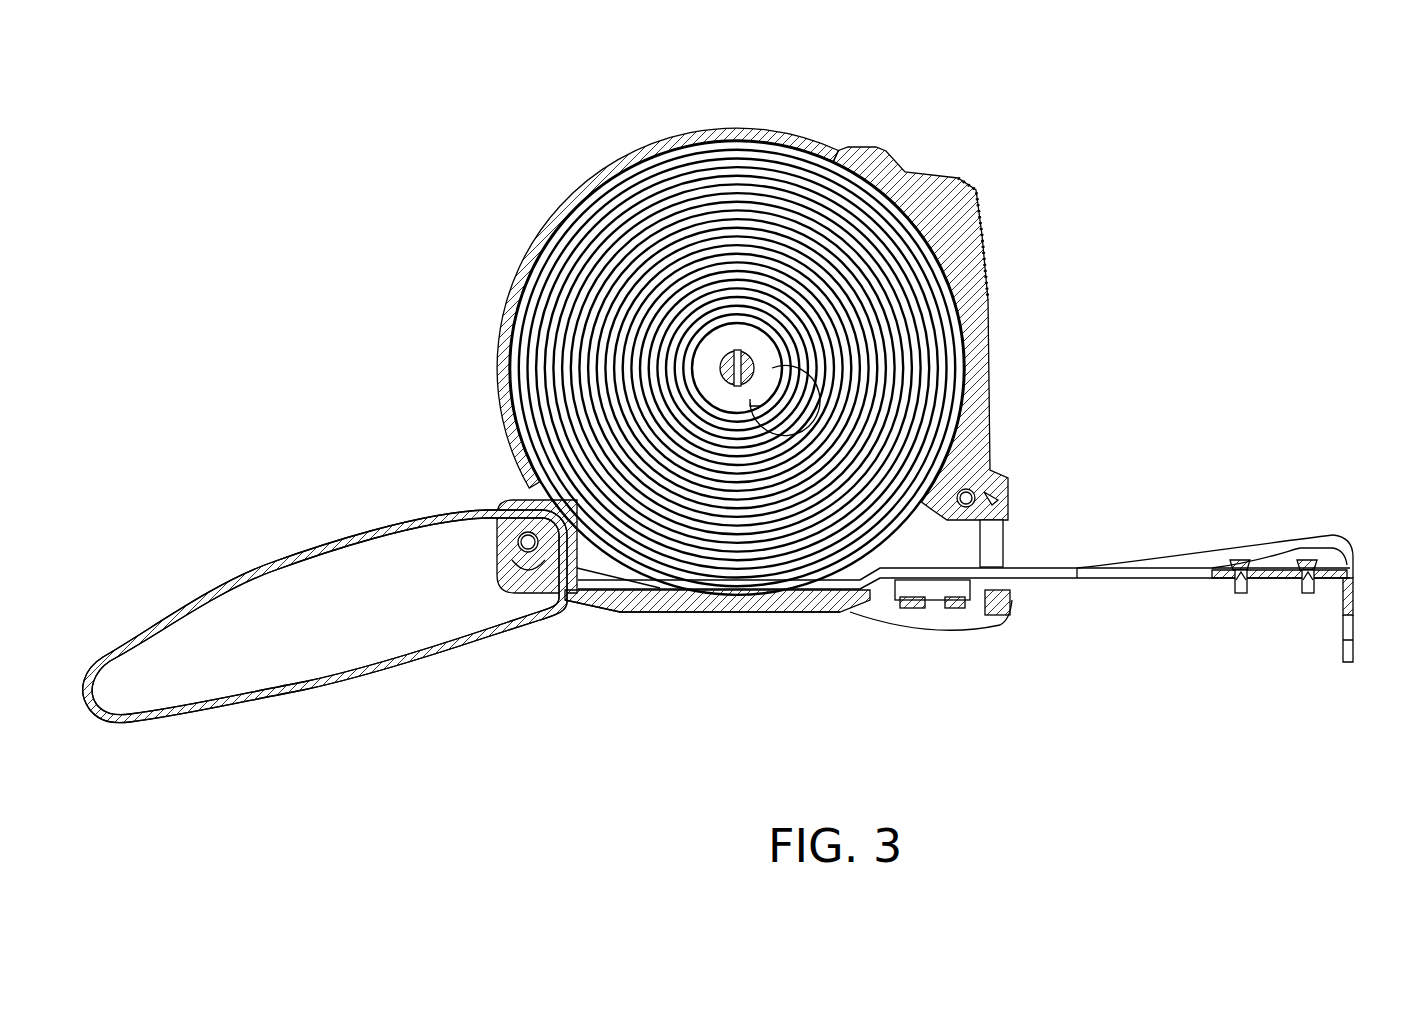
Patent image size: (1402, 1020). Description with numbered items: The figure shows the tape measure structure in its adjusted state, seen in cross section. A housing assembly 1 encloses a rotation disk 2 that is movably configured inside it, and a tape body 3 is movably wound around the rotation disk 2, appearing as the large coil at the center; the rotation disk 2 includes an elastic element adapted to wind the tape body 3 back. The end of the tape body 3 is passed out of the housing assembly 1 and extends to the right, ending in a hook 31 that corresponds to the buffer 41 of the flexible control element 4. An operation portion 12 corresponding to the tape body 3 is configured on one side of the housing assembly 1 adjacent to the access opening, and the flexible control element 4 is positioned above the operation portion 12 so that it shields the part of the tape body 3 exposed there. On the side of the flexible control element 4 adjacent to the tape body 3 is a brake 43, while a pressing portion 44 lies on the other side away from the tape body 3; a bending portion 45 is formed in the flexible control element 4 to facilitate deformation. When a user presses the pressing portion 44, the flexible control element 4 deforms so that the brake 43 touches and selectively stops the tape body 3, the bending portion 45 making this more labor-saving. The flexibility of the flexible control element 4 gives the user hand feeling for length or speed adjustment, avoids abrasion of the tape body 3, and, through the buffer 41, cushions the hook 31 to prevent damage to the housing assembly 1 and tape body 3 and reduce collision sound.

The housing assembly 1 is at (800, 138).
The rotation disk 2 is at (703, 358).
The tape body 3 is at (1035, 572).
The flexible control element 4 is at (702, 669).
The operation portion 12 is at (852, 637).
The hook 31 is at (1350, 625).
The buffer 41 is at (1010, 600).
The brake 43 is at (1012, 588).
The pressing portion 44 is at (925, 614).
The bending portion 45 is at (960, 615).